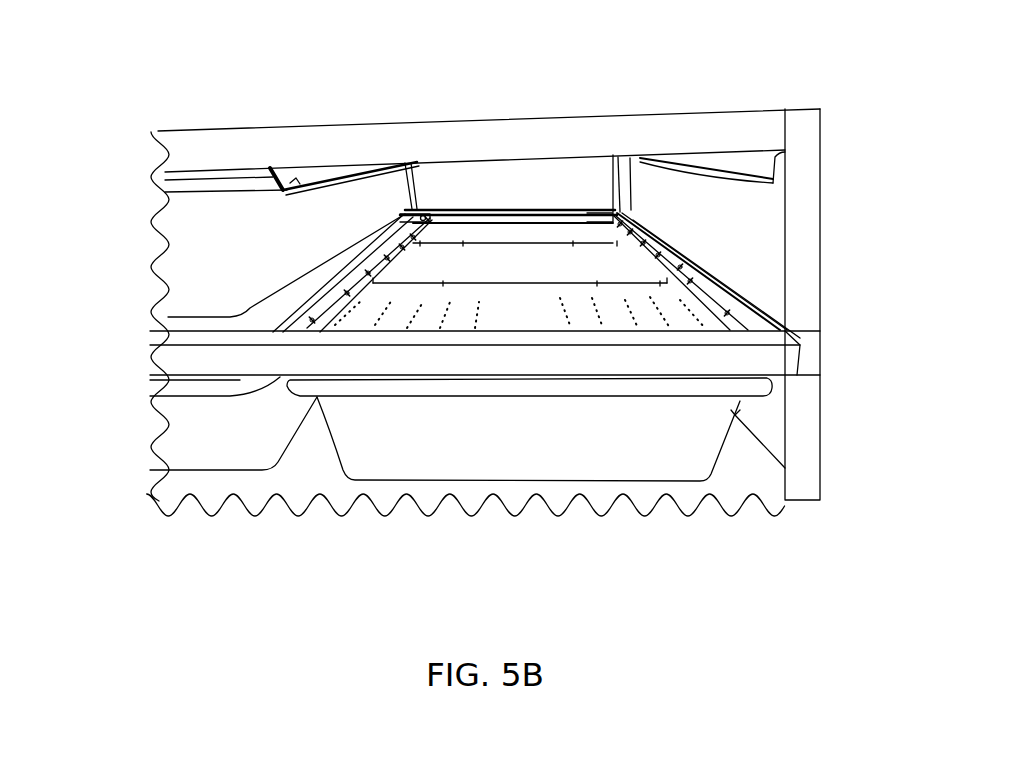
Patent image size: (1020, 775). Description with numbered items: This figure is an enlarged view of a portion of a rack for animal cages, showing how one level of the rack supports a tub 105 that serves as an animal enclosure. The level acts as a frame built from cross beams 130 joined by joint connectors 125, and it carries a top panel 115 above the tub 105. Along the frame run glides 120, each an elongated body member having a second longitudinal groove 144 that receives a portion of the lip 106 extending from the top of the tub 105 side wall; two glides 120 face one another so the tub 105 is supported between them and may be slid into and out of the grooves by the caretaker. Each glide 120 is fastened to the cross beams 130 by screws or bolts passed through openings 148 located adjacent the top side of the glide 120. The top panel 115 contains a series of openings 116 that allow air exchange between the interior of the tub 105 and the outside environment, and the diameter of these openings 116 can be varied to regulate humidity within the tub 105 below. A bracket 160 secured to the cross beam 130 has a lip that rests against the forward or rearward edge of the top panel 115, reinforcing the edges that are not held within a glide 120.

The tub 105 is at (263, 257).
The lip 106 is at (237, 190).
The top panel 115 is at (423, 300).
The openings 116 is at (620, 300).
The glide 120 is at (361, 163).
The joint connector 125 is at (808, 355).
The cross beam 130 is at (712, 135).
The second longitudinal groove 144 is at (403, 214).
The openings 148 is at (613, 208).
The bracket 160 is at (500, 208).